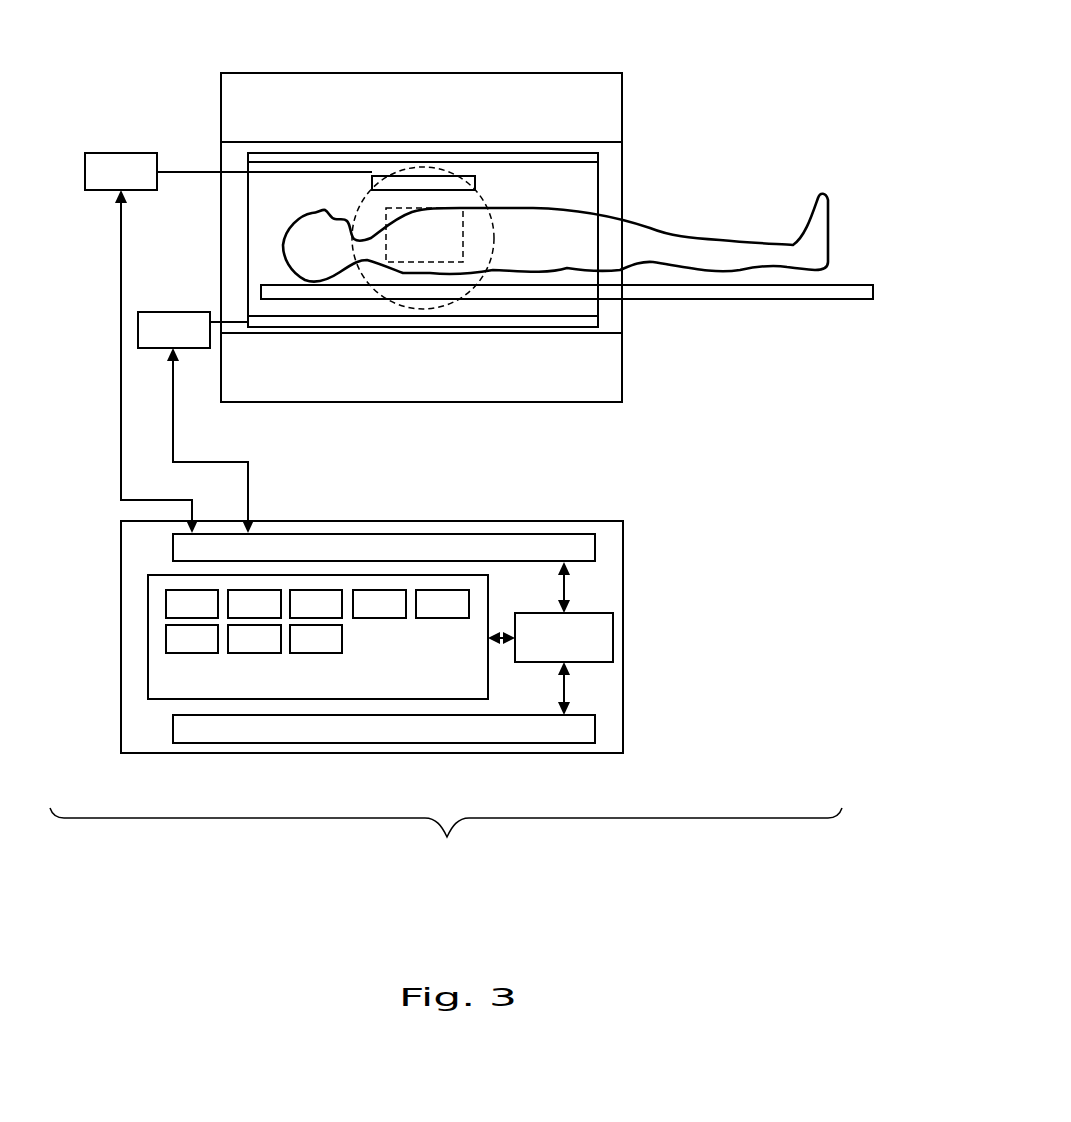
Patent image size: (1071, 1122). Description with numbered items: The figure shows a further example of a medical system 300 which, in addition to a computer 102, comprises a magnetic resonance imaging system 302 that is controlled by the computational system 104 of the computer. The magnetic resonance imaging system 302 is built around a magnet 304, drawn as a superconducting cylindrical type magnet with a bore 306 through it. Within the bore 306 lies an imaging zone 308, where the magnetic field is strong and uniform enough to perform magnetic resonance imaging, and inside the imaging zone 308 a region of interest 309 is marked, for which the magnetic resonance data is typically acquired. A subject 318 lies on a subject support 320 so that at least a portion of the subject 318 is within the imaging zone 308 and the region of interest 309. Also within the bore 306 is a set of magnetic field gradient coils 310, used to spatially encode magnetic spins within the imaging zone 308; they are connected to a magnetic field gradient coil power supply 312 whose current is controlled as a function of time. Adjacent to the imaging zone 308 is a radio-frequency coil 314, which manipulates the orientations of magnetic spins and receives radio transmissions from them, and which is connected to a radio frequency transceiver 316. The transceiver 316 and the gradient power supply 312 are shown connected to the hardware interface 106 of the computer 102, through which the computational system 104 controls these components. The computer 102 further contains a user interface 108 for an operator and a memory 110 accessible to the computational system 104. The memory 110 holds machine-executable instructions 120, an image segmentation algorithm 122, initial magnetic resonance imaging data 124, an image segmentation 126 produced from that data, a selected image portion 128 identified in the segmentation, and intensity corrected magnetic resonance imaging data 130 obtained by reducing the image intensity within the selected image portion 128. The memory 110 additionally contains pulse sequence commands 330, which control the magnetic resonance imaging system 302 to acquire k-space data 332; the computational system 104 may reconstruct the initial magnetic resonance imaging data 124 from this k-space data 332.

The medical system 300 is at (446, 839).
The magnetic resonance imaging system 302 is at (714, 58).
The magnet 304 is at (622, 107).
The bore 306 is at (564, 183).
The imaging zone 308 is at (358, 283).
The region of interest 309 is at (422, 262).
The magnetic field gradient coils 310 is at (512, 327).
The magnetic field gradient coil power supply 312 is at (196, 422).
The radio-frequency coil 314 is at (427, 183).
The radio frequency transceiver 316 is at (228, 343).
The subject 318 is at (828, 231).
The subject support 320 is at (813, 302).
The computer 102 is at (623, 555).
The computational system 104 is at (550, 638).
The hardware interface 106 is at (384, 548).
The user interface 108 is at (384, 729).
The memory 110 is at (148, 637).
The machine-executable instructions 120 is at (192, 604).
The image segmentation algorithm 122 is at (254, 604).
The initial magnetic resonance imaging data 124 is at (316, 604).
The image segmentation 126 is at (379, 604).
The selected image portion 128 is at (442, 604).
The intensity corrected magnetic resonance imaging data 130 is at (192, 639).
The pulse sequence commands 330 is at (254, 639).
The k-space data 332 is at (316, 639).